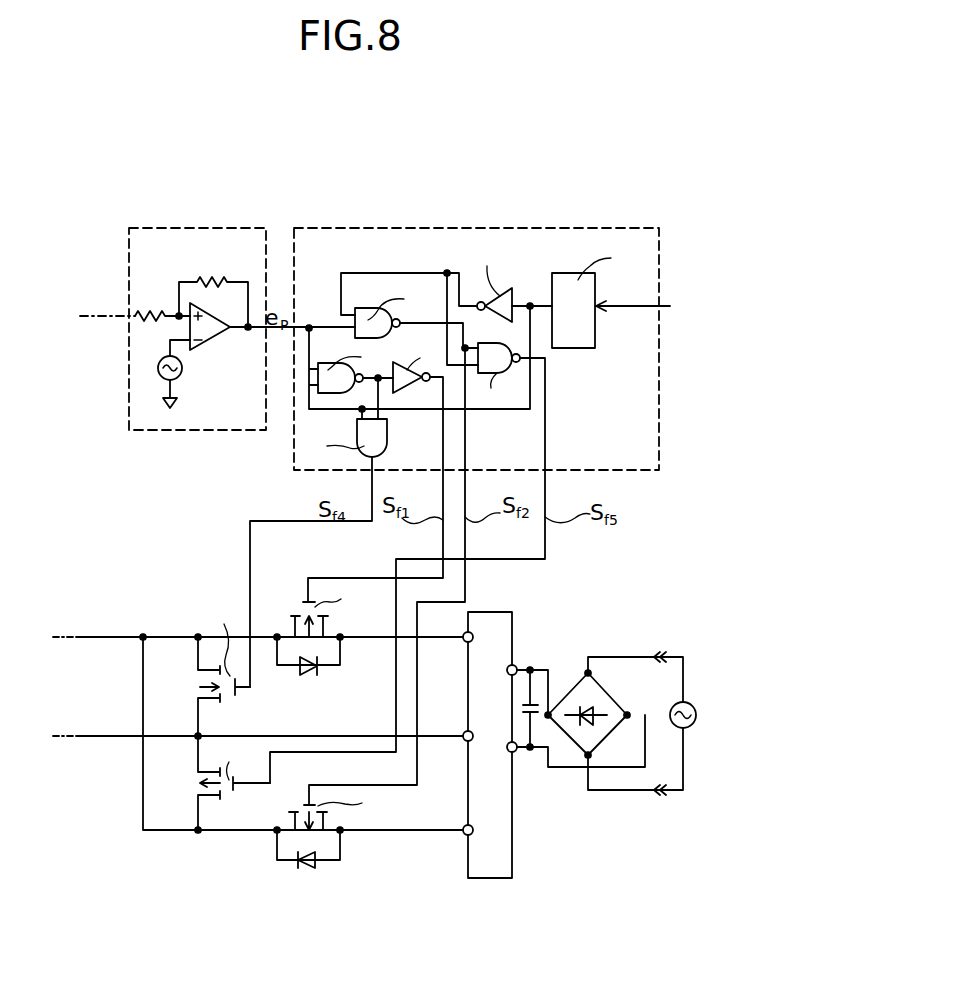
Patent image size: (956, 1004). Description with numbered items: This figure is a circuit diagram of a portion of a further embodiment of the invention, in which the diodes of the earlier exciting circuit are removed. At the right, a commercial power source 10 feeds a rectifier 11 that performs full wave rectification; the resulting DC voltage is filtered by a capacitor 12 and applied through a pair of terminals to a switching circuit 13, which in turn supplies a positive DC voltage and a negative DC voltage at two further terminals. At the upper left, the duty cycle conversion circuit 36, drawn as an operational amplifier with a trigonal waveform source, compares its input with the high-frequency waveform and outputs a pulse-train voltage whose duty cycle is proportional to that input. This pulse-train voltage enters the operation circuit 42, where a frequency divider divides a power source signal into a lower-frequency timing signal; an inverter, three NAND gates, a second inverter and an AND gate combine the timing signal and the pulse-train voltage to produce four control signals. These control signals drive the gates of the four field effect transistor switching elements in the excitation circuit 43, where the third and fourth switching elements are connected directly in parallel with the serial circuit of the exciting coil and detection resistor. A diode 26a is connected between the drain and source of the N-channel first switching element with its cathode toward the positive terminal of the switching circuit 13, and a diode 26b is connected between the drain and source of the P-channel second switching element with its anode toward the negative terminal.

The duty cycle conversion circuit 36 is at (193, 240).
The operation circuit 42 is at (447, 242).
The excitation circuit 43 is at (174, 586).
The commercial power source 10 is at (687, 701).
The rectifier 11 is at (601, 703).
The capacitor 12 is at (541, 700).
The switching circuit 13 is at (513, 877).
The diode 26a is at (309, 682).
The diode 26b is at (313, 871).